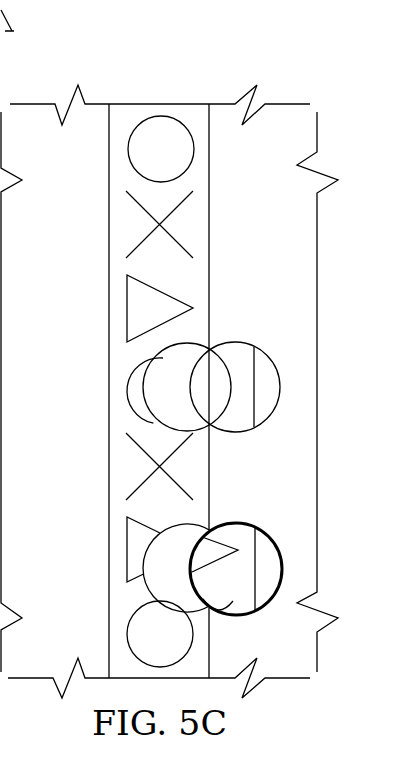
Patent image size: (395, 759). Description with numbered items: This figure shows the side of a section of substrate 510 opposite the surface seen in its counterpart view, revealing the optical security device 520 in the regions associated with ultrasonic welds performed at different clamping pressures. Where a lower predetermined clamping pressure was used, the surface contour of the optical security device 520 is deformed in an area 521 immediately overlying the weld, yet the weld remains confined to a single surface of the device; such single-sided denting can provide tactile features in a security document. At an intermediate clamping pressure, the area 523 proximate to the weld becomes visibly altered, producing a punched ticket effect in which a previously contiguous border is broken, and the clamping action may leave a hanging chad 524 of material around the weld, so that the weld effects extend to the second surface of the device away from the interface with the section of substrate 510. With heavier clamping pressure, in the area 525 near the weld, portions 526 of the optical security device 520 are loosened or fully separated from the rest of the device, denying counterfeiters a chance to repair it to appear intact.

The section of substrate 510 is at (293, 69).
The optical security device 520 is at (193, 112).
The area of deformed surface contour 521 is at (221, 224).
The visibly altered area 523 is at (163, 396).
The hanging chad 524 is at (236, 343).
The area proximate heavy-pressure ultrasonic weld 525 is at (163, 553).
The loosened or separated portions 526 is at (236, 523).